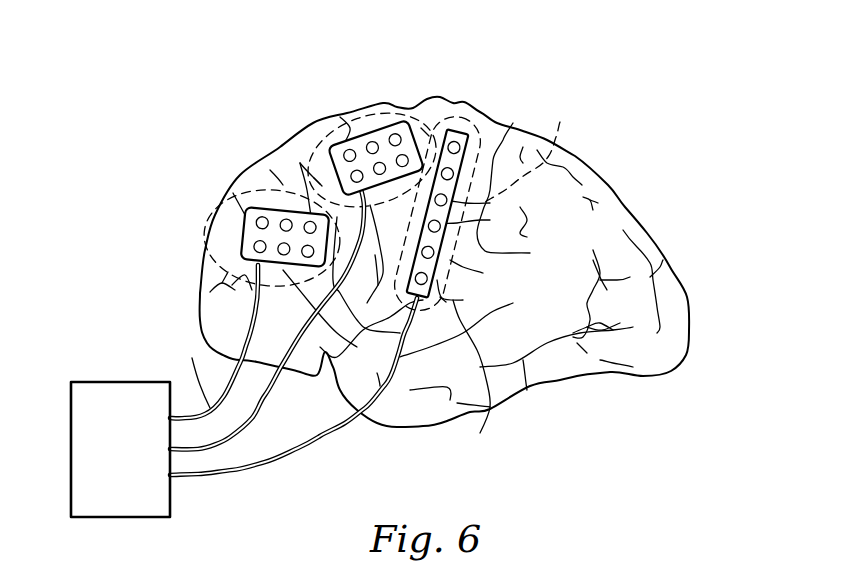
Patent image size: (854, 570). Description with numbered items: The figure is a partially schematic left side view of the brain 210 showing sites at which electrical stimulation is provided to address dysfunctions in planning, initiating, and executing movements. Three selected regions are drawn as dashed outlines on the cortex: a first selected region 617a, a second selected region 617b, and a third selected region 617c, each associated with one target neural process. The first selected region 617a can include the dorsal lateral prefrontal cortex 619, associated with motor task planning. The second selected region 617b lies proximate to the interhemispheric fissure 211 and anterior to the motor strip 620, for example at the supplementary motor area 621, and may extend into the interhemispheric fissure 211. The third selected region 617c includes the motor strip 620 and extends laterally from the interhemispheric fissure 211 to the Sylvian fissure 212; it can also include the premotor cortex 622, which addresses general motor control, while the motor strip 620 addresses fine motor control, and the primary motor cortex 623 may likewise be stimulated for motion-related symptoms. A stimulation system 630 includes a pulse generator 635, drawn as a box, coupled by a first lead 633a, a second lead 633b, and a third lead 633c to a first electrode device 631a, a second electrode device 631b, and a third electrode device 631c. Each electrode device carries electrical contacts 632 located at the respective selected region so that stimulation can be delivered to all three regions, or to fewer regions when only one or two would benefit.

The brain 210 is at (702, 225).
The interhemispheric fissure 211 is at (385, 104).
The Sylvian fissure 212 is at (477, 381).
The first selected region 617a is at (205, 288).
The second selected region 617b is at (297, 113).
The third selected region 617c is at (538, 148).
The dorsal lateral prefrontal cortex 619 is at (268, 207).
The motor strip 620 is at (471, 150).
The supplementary motor area 621 is at (363, 123).
The premotor cortex 622 is at (330, 168).
The primary motor cortex 623 is at (459, 116).
The stimulation system 630 is at (117, 321).
The first electrode device 631a is at (320, 182).
The second electrode device 631b is at (425, 132).
The third electrode device 631c is at (445, 297).
The electrical contacts 632 is at (257, 217).
The first lead 633a is at (210, 402).
The second lead 633b is at (242, 424).
The third lead 633c is at (227, 478).
The pulse generator 635 is at (71, 496).